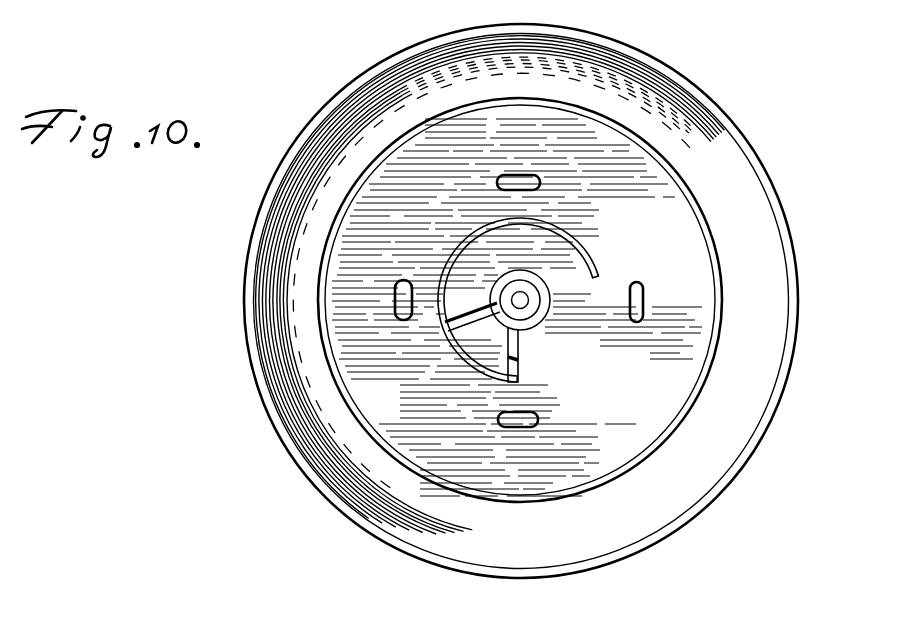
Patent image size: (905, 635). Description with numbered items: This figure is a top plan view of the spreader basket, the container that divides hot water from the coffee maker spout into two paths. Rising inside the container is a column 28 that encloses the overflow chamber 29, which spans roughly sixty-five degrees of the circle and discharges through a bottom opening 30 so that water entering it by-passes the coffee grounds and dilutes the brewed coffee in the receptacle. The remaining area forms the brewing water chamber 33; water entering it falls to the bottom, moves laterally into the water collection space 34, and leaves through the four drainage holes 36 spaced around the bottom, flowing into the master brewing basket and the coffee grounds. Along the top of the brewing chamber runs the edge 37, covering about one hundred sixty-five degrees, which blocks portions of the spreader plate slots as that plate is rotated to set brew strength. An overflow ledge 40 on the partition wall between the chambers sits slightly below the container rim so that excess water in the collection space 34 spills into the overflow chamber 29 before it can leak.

The column 28 is at (613, 262).
The overflow chamber 29 is at (485, 326).
The bottom opening 30 is at (518, 296).
The brewing water chamber 33 is at (573, 242).
The water collection space 34 is at (634, 386).
The drainage holes 36 is at (533, 174).
The edge 37 is at (553, 258).
The overflow ledge 40 is at (471, 308).